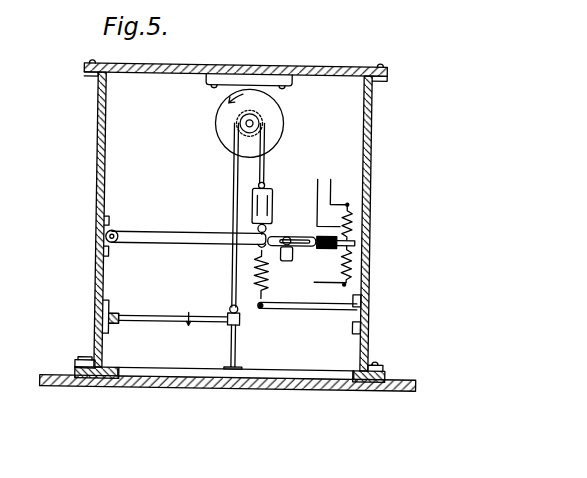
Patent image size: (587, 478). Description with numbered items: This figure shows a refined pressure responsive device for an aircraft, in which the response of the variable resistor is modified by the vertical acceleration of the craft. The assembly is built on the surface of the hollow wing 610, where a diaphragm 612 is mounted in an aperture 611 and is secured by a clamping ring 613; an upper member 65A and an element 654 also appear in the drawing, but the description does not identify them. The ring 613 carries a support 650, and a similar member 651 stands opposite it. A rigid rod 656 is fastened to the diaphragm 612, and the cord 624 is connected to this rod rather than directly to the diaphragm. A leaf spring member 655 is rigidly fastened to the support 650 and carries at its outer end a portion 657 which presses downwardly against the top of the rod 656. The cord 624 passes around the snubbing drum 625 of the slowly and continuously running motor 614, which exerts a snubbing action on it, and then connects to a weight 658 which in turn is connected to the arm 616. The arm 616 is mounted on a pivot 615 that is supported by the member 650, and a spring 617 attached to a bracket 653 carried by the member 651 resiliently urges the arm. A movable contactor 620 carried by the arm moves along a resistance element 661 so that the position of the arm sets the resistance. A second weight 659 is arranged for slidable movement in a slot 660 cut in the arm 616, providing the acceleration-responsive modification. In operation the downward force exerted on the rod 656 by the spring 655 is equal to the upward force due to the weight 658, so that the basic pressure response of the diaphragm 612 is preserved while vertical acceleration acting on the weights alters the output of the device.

The top plate 65A is at (256, 65).
The support 650 is at (97, 154).
The support member 651 is at (369, 119).
The wing surface 610 is at (398, 395).
The diaphragm 612 is at (182, 384).
The aperture 611 is at (134, 382).
The clamping ring 613 is at (388, 378).
The motor 614 is at (271, 119).
The snubbing drum 625 is at (245, 125).
The cord 624 is at (233, 173).
The weight 658 is at (271, 198).
The pivot 615 is at (108, 222).
The arm 616 is at (170, 234).
The slot 660 is at (300, 238).
The second weight 659 is at (293, 248).
The spring 617 is at (270, 283).
The resistor 661 is at (352, 218).
The movable contactor 620 is at (347, 254).
The bracket 653 is at (296, 309).
The wall bracket 654 is at (102, 312).
The leaf spring member 655 is at (154, 316).
The pressing portion 657 is at (231, 309).
The rod 656 is at (237, 353).